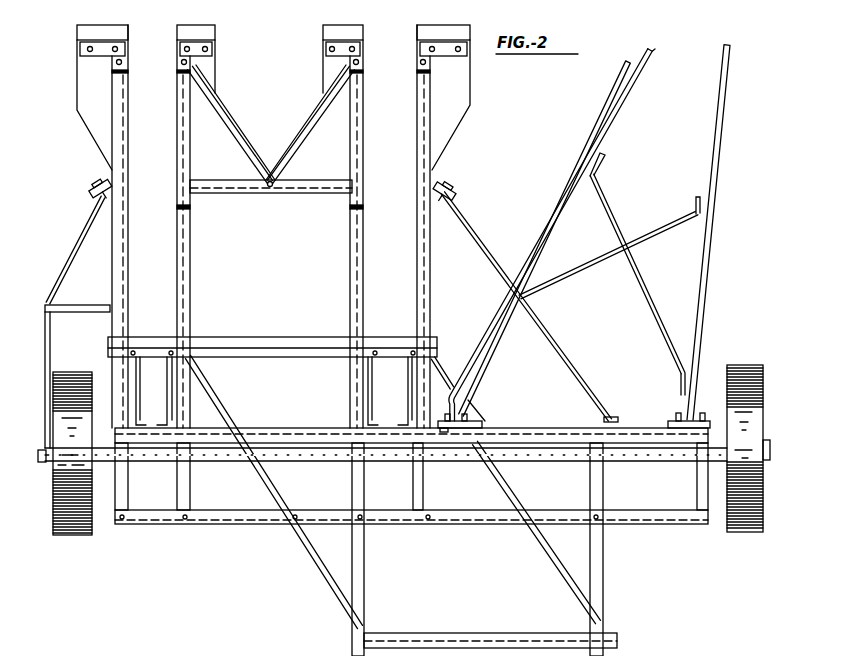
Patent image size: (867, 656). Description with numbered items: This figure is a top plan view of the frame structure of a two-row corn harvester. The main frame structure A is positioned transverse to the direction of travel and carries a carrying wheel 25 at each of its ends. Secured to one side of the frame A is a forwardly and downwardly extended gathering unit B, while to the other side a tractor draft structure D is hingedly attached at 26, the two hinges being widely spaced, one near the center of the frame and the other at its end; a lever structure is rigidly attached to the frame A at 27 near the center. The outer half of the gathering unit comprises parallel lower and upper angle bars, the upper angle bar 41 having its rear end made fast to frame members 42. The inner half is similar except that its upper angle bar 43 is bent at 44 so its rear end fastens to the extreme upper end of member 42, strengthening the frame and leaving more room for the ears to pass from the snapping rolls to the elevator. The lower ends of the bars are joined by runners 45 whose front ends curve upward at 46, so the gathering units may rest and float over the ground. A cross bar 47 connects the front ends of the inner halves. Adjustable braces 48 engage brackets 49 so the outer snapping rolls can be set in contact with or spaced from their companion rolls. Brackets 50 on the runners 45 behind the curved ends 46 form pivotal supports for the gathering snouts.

The carrying wheels 25 is at (72, 535).
The hinge 26 is at (470, 420).
The rigid attachment 27 is at (440, 432).
The upper angle bar 41 is at (126, 260).
The frame members 42 is at (170, 398).
The upper angle bar 43 is at (188, 306).
The bend 44 is at (190, 208).
The runners 45 is at (327, 85).
The curved end 46 is at (183, 30).
The cross bar 47 is at (250, 196).
The braces 48 is at (72, 246).
The brackets 49 is at (97, 186).
The brackets 50 is at (95, 52).
The main frame structure A is at (313, 440).
The gathering unit B is at (590, 128).
The tractor draft structure D is at (660, 322).